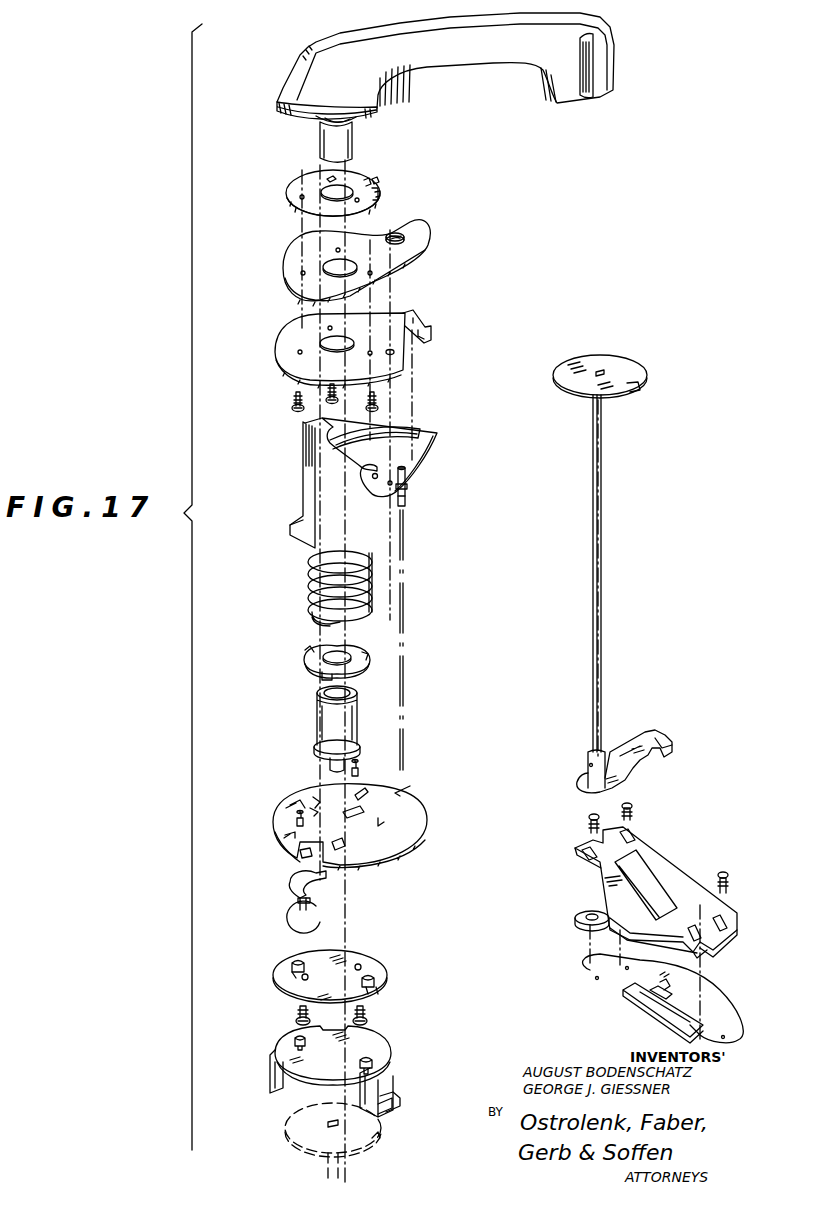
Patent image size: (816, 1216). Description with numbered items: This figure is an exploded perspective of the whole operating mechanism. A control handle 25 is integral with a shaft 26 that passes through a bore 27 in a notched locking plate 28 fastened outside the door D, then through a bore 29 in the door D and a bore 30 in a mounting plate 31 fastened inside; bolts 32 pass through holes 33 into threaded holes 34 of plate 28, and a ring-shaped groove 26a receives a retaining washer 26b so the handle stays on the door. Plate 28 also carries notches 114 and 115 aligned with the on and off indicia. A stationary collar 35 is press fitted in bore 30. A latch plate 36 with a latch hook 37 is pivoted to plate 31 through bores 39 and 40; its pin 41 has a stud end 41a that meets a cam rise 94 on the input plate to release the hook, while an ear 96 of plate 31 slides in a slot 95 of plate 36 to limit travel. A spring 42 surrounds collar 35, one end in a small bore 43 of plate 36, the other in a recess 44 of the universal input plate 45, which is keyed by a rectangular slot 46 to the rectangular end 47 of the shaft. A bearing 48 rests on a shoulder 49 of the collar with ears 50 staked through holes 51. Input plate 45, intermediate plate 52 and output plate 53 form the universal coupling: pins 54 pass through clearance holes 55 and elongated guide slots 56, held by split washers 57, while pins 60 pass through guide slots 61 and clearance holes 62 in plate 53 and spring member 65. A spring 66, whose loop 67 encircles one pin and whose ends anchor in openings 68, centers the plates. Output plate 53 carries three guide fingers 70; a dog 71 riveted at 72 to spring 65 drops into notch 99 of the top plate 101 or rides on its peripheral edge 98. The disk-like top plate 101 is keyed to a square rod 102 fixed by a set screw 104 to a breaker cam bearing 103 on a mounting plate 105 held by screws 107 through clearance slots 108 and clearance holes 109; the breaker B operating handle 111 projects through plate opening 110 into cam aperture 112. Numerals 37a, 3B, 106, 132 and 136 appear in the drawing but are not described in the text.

The control handle 25 is at (440, 80).
The shaft 26 is at (352, 148).
The ring-shaped groove 26a is at (352, 125).
The retaining washer 26b is at (320, 125).
The bore 27 is at (330, 200).
The notched locking plate 28 is at (290, 193).
The bore 29 is at (330, 268).
The bore 30 is at (340, 348).
The mounting plate 31 is at (277, 350).
The bolts 32 is at (292, 402).
The holes 33 is at (333, 250).
The holes 34 is at (327, 180).
The collar 35 is at (317, 718).
The latch plate 36 is at (434, 442).
The latch hook 37 is at (296, 529).
The bracket foot 37a is at (300, 540).
The boss 3B is at (402, 240).
The bore 39 is at (395, 352).
The bore 40 is at (390, 487).
The pin 41 is at (408, 490).
The stud end 41a is at (408, 504).
The spring 42 is at (307, 585).
The small bore 43 is at (366, 479).
The recess 44 is at (290, 882).
The universal input plate 45 is at (285, 795).
The rectangular slot 46 is at (358, 812).
The rectangular end 47 is at (328, 763).
The bearing 48 is at (303, 661).
The shoulder 49 is at (314, 748).
The ears 50 is at (308, 650).
The holes 51 is at (348, 823).
The intermediate plate 52 is at (282, 992).
The output plate 53 is at (330, 1084).
The pins 54 is at (296, 1014).
The clearance holes 55 is at (310, 978).
The elongated guide slots 56 is at (364, 790).
The retaining split washers 57 is at (360, 766).
The pins 60 is at (290, 962).
The elongated guide slots 61 is at (290, 970).
The clearance holes 62 is at (360, 1066).
The spring member 65 is at (385, 1072).
The spring 66 is at (286, 914).
The loop 67 is at (312, 900).
The openings 68 is at (313, 800).
The guide fingers 70 is at (275, 1078).
The dog 71 is at (386, 1110).
The rivet 72 is at (401, 1101).
The cam rise 94 is at (410, 787).
The slot 95 is at (415, 431).
The ear 96 is at (420, 332).
The peripheral edge 98 is at (575, 400).
The notch 99 is at (641, 390).
The top plate 101 is at (299, 1156).
The square rod 102 is at (603, 570).
The breaker cam bearing 103 is at (630, 742).
The set screw 104 is at (587, 762).
The mounting plate 105 is at (662, 870).
The washer 106 is at (578, 925).
The screws 107 is at (588, 818).
The clearance slots 108 is at (630, 840).
The clearance holes 109 is at (738, 1025).
The elongated plate opening 110 is at (665, 890).
The operating handle 111 is at (676, 980).
The cam aperture 112 is at (664, 742).
The notch 114 is at (378, 181).
The notch 115 is at (380, 192).
The notch 132 is at (372, 172).
The tab 136 is at (380, 198).
The breaker B is at (744, 1002).
The door D is at (430, 251).